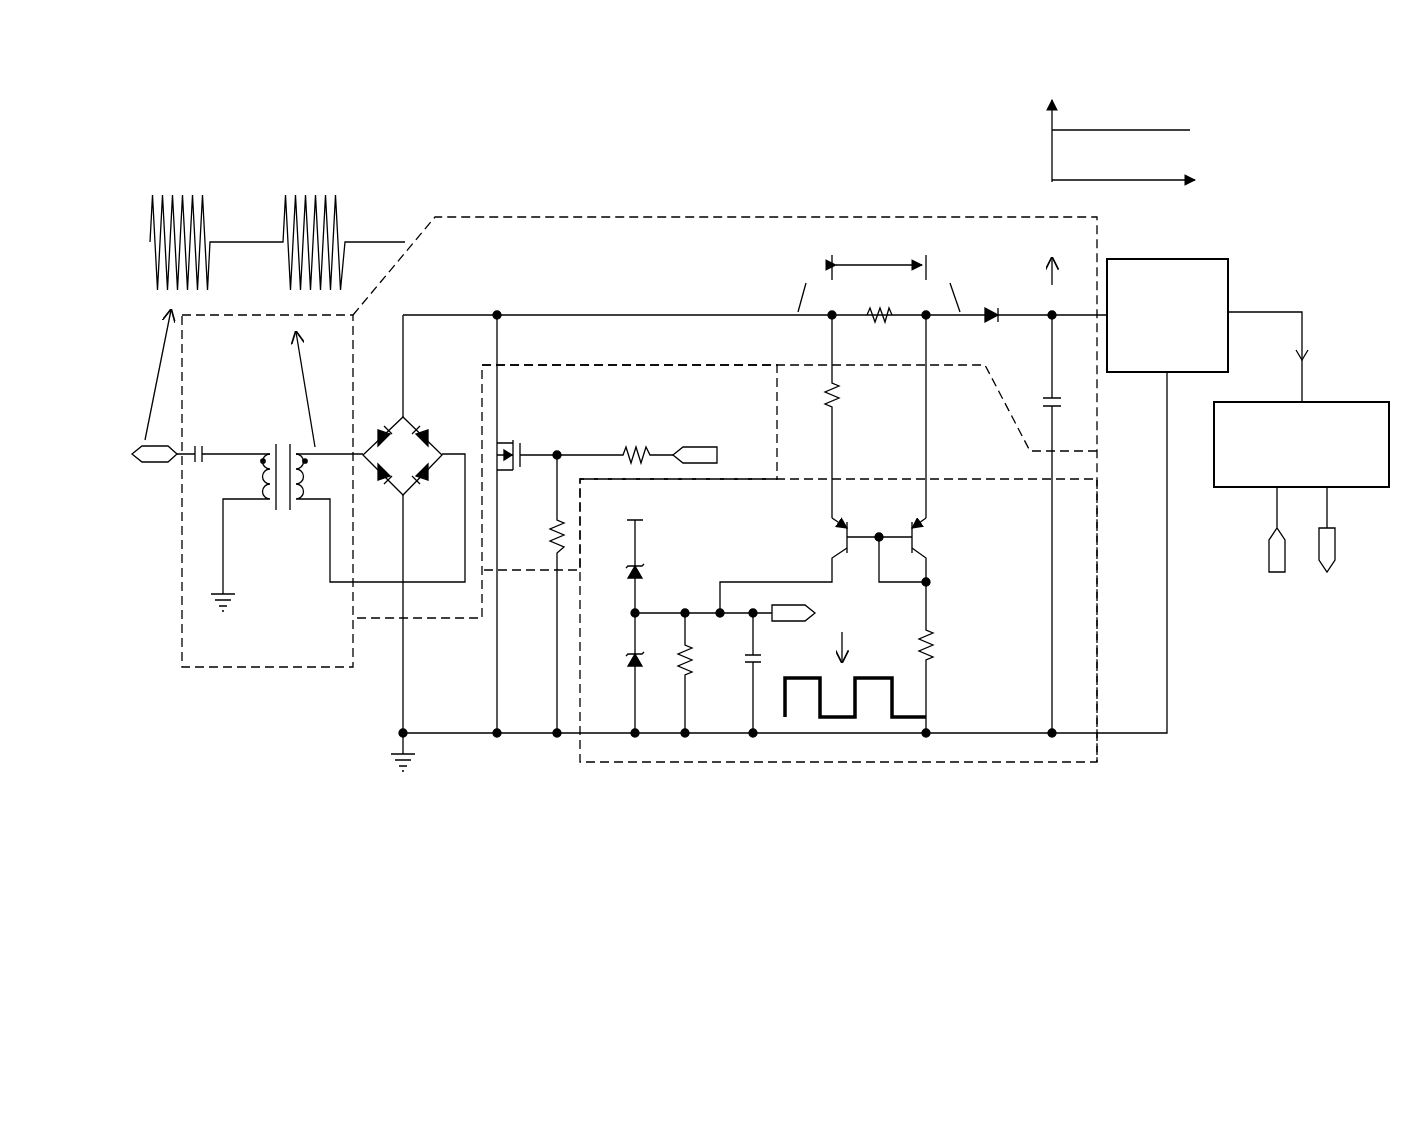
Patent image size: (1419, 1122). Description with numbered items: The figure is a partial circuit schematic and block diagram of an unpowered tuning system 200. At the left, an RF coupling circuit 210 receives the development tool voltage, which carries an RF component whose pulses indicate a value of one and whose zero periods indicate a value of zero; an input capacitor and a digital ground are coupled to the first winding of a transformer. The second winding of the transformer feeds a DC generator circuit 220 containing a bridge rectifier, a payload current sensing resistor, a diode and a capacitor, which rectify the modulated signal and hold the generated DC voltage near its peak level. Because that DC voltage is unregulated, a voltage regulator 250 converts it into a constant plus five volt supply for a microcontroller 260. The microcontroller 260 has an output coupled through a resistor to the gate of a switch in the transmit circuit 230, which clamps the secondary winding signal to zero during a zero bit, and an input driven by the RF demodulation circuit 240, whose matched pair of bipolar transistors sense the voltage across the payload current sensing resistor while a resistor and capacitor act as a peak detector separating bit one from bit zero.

The unpowered tuning system 200 is at (300, 820).
The RF coupling circuit 210 is at (182, 606).
The DC generator circuit 220 is at (826, 215).
The transmit circuit 230 is at (545, 572).
The RF demodulation circuit 240 is at (845, 763).
The voltage regulator 250 is at (1150, 360).
The microcontroller 260 is at (1285, 474).